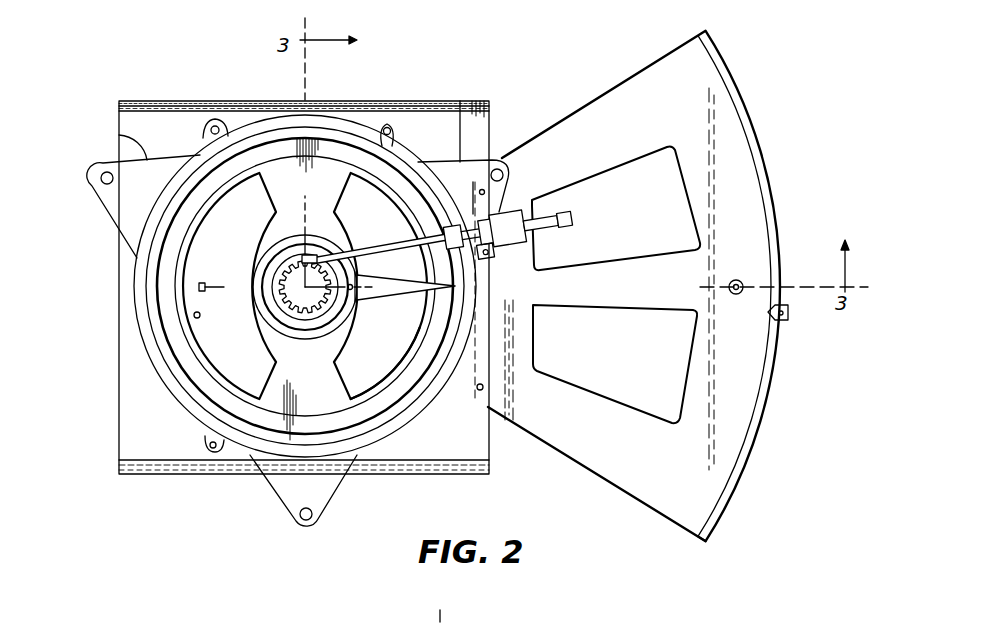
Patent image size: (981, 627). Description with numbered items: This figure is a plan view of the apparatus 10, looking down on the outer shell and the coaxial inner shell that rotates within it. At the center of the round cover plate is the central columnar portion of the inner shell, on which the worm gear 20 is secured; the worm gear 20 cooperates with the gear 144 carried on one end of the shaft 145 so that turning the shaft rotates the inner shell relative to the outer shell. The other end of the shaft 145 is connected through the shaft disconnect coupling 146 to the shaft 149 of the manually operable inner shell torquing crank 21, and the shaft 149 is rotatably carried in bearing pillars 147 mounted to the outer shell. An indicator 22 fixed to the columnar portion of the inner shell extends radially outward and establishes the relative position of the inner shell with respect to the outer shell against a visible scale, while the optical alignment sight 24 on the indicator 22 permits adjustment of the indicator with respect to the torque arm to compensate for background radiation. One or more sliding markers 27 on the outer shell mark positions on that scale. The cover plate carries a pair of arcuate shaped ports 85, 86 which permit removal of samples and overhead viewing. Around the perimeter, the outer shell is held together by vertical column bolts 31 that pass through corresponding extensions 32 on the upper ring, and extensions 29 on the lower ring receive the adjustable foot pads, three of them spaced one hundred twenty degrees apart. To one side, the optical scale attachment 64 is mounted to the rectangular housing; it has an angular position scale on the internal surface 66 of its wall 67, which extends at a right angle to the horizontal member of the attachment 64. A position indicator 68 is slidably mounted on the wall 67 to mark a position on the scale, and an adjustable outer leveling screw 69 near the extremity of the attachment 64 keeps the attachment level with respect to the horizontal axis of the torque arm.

The apparatus 10 is at (211, 484).
The worm gear 20 is at (296, 312).
The inner shell torquing crank 21 is at (571, 220).
The indicator 22 is at (410, 300).
The optical alignment sight 24 is at (336, 330).
The sliding indicators or markers 27 is at (391, 121).
The extensions 29 is at (205, 124).
The vertical column bolt 31 is at (100, 183).
The extension 32 is at (118, 133).
The optical scale attachment 64 is at (607, 478).
The internal surface 66 is at (748, 447).
The wall 67 is at (698, 543).
The position indicator 68 is at (792, 312).
The adjustable outer leveling screw 69 is at (737, 281).
The arcuate shaped port 85 is at (382, 380).
The arcuate shaped port 86 is at (229, 235).
The gear 144 is at (312, 252).
The shaft 145 is at (362, 255).
The shaft disconnect coupling 146 is at (437, 256).
The bearing pillars 147 is at (497, 215).
The shaft 149 is at (499, 253).